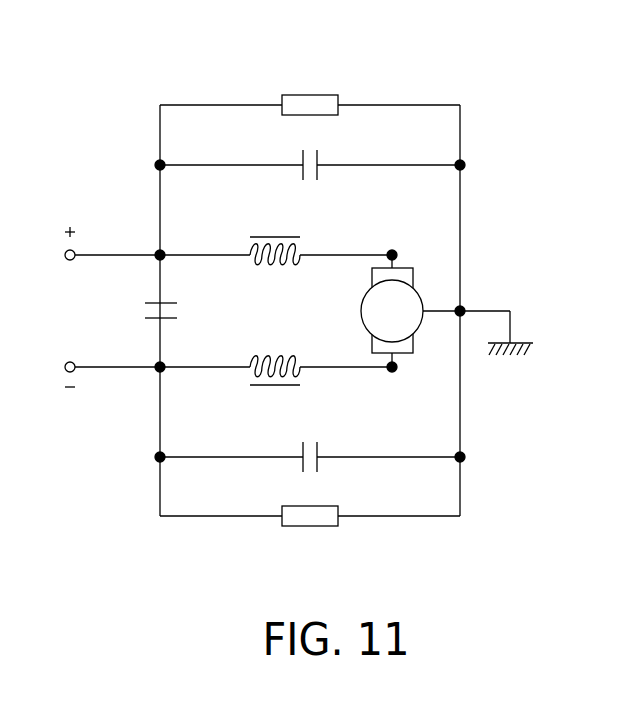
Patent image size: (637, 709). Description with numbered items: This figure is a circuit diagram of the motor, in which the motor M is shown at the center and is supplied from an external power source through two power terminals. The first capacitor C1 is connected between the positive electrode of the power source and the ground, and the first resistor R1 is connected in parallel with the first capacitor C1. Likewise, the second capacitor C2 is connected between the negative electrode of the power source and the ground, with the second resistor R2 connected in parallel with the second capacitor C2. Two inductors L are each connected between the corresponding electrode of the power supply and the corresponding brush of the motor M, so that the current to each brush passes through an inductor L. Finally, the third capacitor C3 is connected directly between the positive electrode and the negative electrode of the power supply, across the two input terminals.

The first resistor R1 is at (310, 88).
The first capacitor C1 is at (310, 184).
The second capacitor C2 is at (310, 439).
The third capacitor C3 is at (140, 314).
The second resistor R2 is at (310, 534).
The inductor L is at (321, 311).
The motor M is at (410, 311).